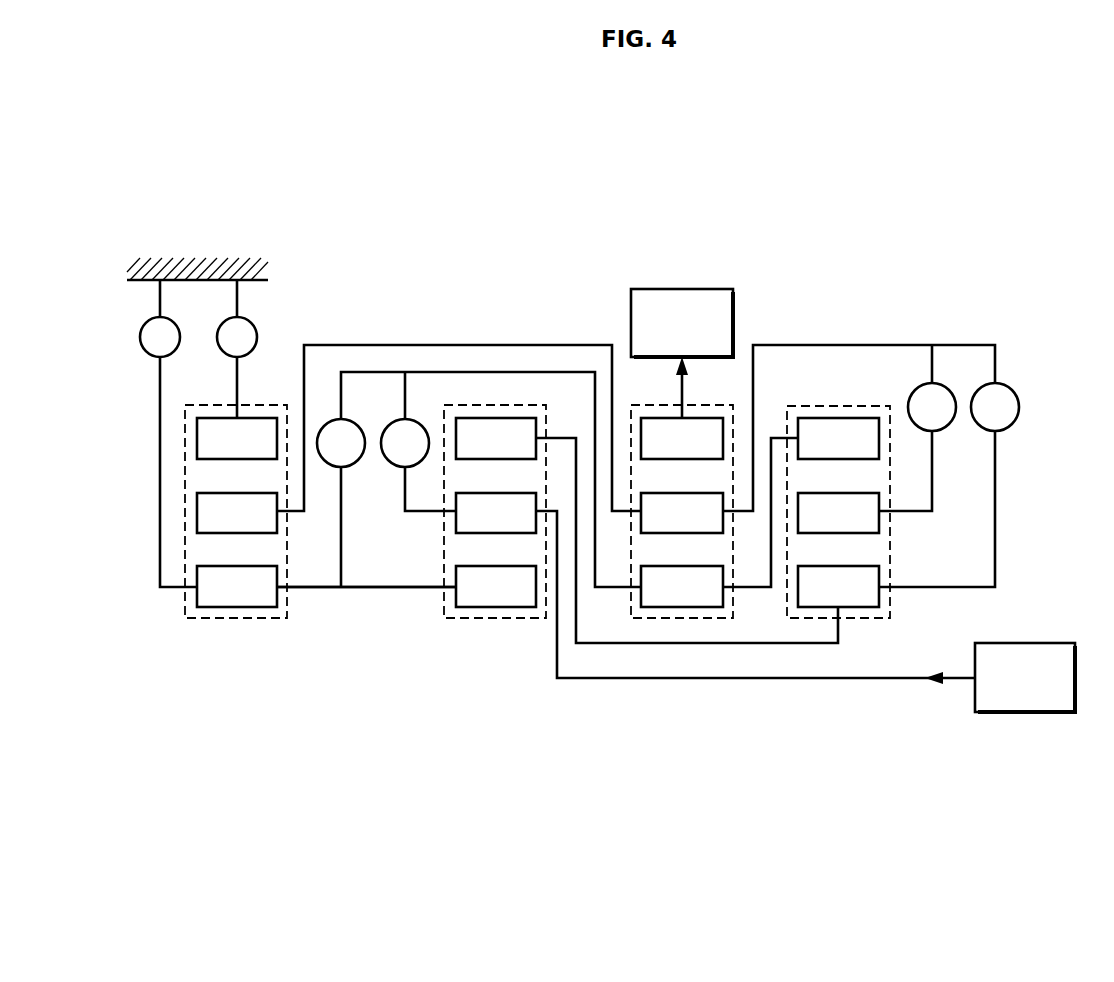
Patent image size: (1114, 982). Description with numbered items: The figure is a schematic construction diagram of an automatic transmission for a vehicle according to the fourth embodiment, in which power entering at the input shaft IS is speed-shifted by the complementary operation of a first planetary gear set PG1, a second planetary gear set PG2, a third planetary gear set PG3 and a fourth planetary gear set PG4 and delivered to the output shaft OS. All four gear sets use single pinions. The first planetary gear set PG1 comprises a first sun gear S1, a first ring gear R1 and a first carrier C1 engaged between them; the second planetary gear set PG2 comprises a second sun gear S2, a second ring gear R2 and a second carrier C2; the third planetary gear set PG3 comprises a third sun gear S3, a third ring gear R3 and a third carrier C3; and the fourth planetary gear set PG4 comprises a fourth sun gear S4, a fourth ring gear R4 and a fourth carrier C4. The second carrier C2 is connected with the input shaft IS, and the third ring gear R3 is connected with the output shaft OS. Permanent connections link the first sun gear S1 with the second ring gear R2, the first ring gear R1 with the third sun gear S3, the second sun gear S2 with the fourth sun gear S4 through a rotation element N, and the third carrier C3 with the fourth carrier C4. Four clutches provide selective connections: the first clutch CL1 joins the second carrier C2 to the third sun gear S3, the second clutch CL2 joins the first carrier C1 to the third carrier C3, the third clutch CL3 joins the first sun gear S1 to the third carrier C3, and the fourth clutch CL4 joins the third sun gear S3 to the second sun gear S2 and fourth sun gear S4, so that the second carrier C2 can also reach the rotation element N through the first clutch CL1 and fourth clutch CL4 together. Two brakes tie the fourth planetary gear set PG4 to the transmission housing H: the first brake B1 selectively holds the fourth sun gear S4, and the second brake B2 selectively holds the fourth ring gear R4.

The transmission housing H is at (200, 257).
The first brake B1 is at (168, 433).
The second brake B2 is at (237, 349).
The first clutch CL1 is at (418, 441).
The second clutch CL2 is at (932, 388).
The third clutch CL3 is at (995, 407).
The fourth clutch CL4 is at (479, 479).
The first planetary gear set PG1 is at (859, 576).
The second planetary gear set PG2 is at (709, 576).
The third planetary gear set PG3 is at (813, 546).
The fourth planetary gear set PG4 is at (413, 546).
The first ring gear R1 is at (801, 502).
The first carrier C1 is at (865, 482).
The first sun gear S1 is at (896, 519).
The second ring gear R2 is at (647, 530).
The second carrier C2 is at (715, 588).
The second sun gear S2 is at (496, 586).
The third ring gear R3 is at (682, 408).
The third carrier C3 is at (818, 439).
The third sun gear S3 is at (682, 586).
The fourth ring gear R4 is at (237, 438).
The fourth carrier C4 is at (419, 439).
The fourth sun gear S4 is at (326, 586).
The rotation element N is at (384, 590).
The output shaft OS is at (680, 289).
The input shaft IS is at (1020, 713).